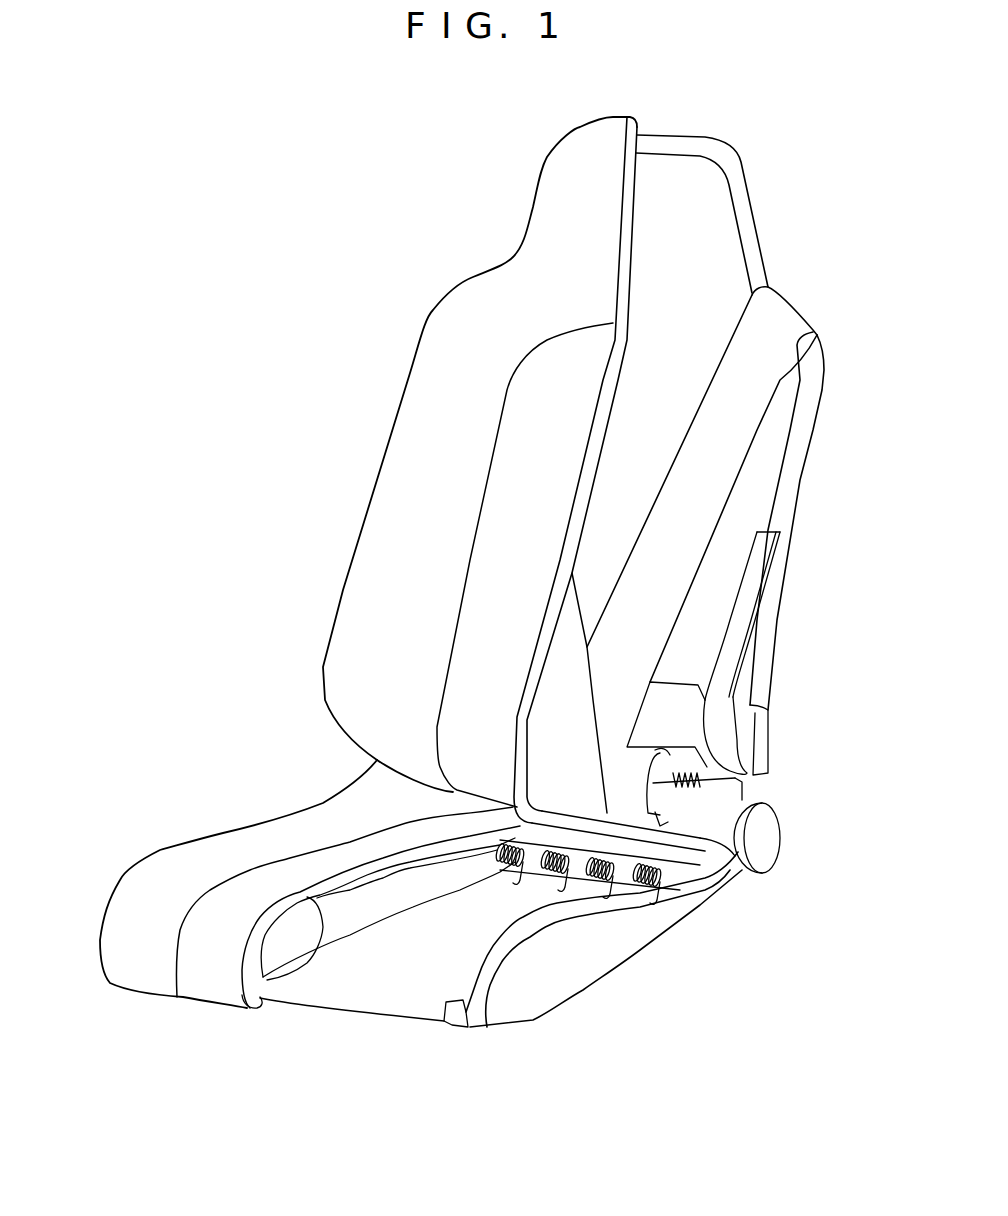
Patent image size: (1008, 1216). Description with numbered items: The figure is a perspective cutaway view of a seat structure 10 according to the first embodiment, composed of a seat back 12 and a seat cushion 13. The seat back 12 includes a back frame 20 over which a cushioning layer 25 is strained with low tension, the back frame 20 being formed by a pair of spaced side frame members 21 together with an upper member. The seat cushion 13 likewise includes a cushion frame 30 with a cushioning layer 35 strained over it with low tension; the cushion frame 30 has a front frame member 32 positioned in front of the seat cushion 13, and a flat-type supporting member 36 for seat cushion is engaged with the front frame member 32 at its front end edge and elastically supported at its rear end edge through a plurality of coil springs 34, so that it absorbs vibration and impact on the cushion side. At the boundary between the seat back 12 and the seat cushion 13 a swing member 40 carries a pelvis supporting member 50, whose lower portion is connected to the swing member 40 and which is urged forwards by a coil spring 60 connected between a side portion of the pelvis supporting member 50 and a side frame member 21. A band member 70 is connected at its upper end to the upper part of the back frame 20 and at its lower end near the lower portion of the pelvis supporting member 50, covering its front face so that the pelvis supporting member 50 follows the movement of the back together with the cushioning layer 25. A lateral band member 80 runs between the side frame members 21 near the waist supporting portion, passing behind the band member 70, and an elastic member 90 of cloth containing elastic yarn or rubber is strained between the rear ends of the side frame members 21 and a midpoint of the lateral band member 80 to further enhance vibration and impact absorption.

The seat structure 10 is at (308, 468).
The seat back 12 is at (405, 376).
The seat cushion 13 is at (162, 850).
The back frame 20 is at (720, 142).
The side frame member 21 is at (790, 520).
The cushioning layer 25 is at (627, 273).
The cushion frame 30 is at (560, 983).
The front frame member 32 is at (453, 1022).
The coil springs 34 is at (655, 877).
The cushioning layer 35 is at (307, 897).
The flat-type supporting member for seat cushion 36 is at (380, 983).
The swing member 40 is at (690, 832).
The pelvis supporting member 50 is at (655, 797).
The coil spring 60 is at (740, 787).
The band member 70 is at (696, 410).
The lateral band member 80 is at (675, 683).
The elastic member 90 is at (708, 683).